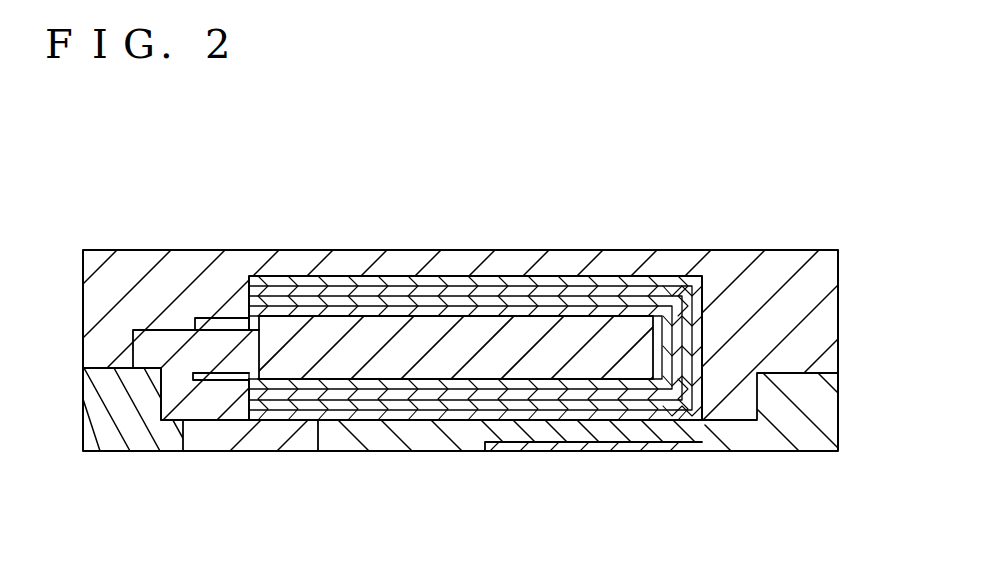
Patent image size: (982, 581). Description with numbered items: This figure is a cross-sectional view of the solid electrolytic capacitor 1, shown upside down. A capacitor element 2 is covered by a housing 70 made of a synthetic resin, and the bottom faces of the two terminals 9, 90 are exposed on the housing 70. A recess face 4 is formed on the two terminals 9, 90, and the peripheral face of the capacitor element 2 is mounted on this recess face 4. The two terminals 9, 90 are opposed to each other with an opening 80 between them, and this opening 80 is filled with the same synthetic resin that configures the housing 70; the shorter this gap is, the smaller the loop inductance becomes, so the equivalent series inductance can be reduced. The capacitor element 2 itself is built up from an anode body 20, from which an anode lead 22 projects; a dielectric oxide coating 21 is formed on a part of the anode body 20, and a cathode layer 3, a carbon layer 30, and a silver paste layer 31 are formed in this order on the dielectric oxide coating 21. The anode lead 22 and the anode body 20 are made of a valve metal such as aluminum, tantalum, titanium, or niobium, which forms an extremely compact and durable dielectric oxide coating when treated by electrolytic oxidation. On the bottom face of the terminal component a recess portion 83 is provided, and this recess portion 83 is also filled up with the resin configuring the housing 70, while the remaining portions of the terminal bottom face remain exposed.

The solid electrolytic capacitor 1 is at (777, 194).
The capacitor element 2 is at (479, 268).
The cathode layer 3 is at (495, 301).
The recess face 4 is at (162, 388).
The terminal 9 is at (112, 451).
The anode body 20 is at (479, 302).
The dielectric oxide coating 21 is at (432, 311).
The anode lead 22 is at (177, 270).
The carbon layer 30 is at (537, 293).
The silver paste layer 31 is at (587, 283).
The housing 70 is at (171, 342).
The opening 80 is at (183, 425).
The recess portion 83 is at (640, 452).
The terminal 90 is at (432, 452).